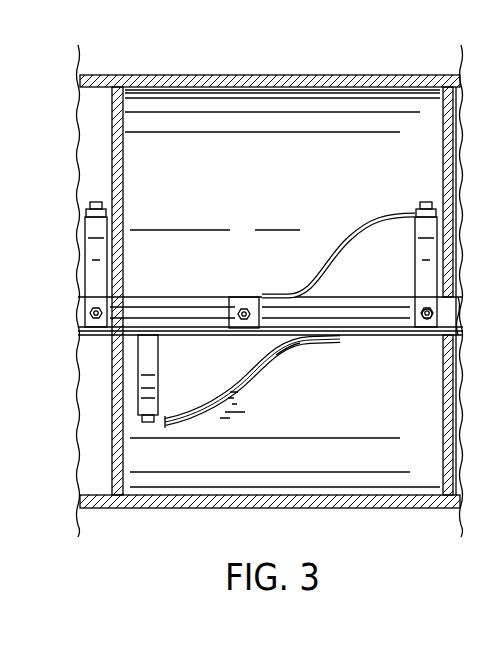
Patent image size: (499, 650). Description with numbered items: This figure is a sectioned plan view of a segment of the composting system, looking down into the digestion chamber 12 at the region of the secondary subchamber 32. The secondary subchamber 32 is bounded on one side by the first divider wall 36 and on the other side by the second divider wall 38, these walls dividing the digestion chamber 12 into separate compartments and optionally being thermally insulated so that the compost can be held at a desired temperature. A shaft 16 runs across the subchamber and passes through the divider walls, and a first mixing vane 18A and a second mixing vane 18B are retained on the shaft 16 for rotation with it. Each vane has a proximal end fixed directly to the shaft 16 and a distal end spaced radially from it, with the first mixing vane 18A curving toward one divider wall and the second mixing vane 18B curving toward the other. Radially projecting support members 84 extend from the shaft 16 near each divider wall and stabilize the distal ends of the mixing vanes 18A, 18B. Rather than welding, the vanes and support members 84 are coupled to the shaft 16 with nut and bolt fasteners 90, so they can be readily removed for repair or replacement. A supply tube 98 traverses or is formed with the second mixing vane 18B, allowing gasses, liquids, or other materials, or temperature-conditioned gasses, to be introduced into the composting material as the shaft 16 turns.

The digestion chamber 12 is at (143, 62).
The secondary subchamber 32 is at (244, 92).
The second divider wall 38 is at (450, 126).
The first divider wall 36 is at (115, 407).
The shaft 16 is at (196, 300).
The support member 84 is at (420, 252).
The nut and bolt fasteners 90 is at (425, 320).
The first mixing vane 18A is at (387, 214).
The second mixing vane 18B is at (242, 358).
The supply tube 98 is at (282, 343).